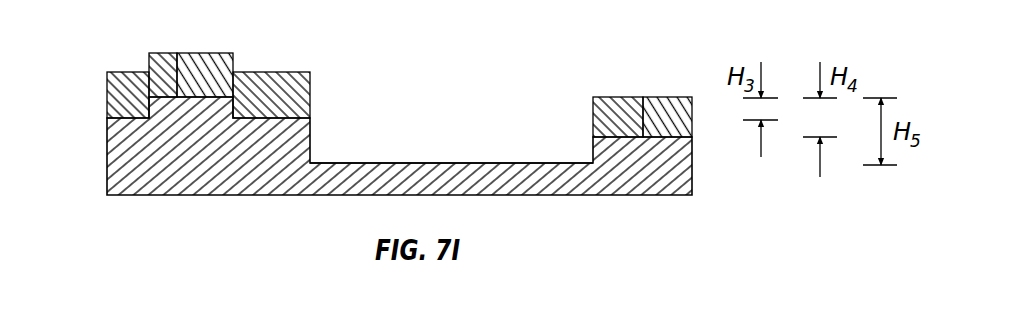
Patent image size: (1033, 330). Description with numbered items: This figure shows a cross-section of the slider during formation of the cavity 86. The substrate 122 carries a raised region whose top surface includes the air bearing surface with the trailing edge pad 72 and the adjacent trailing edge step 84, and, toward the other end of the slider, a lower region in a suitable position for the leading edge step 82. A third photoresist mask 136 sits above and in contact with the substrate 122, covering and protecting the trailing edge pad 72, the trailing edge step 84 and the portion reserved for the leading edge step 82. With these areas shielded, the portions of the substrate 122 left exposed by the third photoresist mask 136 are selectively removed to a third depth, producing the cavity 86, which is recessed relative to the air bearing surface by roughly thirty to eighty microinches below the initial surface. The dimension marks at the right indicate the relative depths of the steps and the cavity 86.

The substrate 122 is at (106, 160).
The third photoresist mask 136 is at (310, 92).
The trailing edge step 84 is at (248, 75).
The trailing edge pad 72 is at (177, 56).
The cavity 86 is at (437, 162).
The leading edge step 82 is at (643, 100).